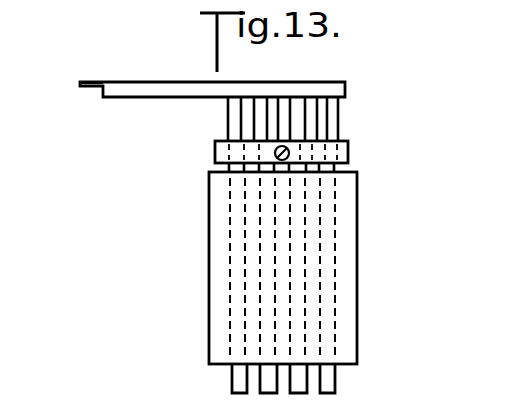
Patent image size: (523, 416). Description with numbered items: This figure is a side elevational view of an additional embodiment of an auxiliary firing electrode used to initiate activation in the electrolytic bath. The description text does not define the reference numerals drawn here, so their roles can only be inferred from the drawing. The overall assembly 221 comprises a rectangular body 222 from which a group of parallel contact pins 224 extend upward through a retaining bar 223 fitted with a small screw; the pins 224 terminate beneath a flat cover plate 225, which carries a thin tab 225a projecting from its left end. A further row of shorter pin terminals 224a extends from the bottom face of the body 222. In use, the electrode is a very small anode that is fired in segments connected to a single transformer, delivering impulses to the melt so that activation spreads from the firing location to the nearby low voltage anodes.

The connector assembly 221 is at (327, 247).
The connector body 222 is at (358, 270).
The retaining bar 223 is at (349, 151).
The contact pins 224 is at (340, 122).
The pin terminals 224a is at (336, 383).
The cover plate 225 is at (348, 91).
The plate tab 225a is at (91, 80).